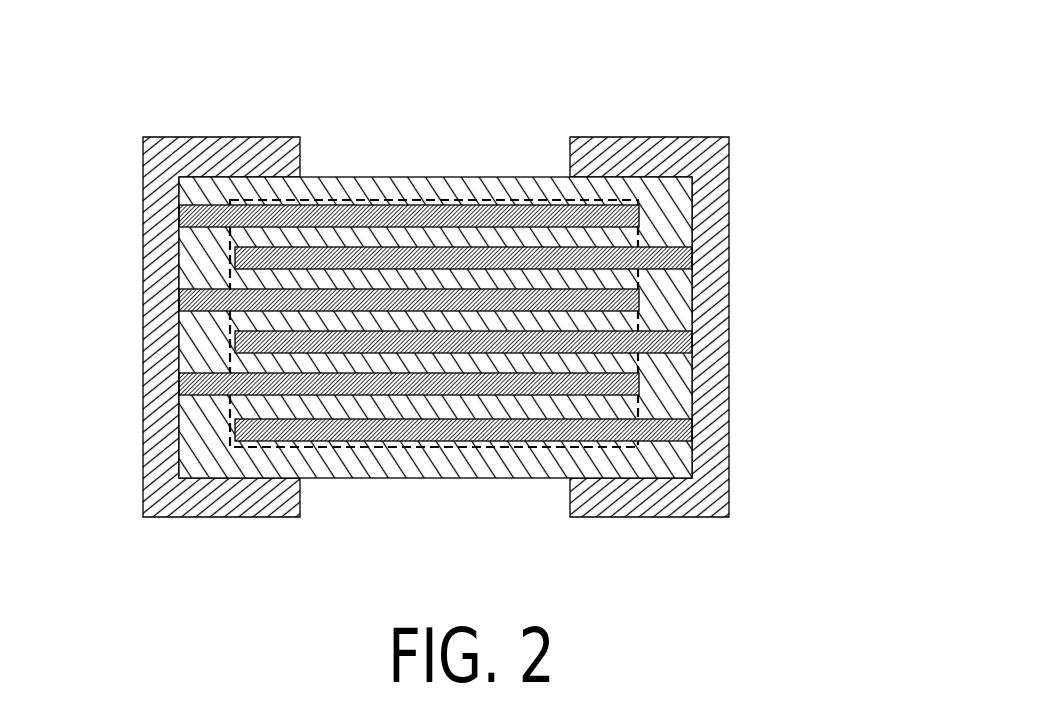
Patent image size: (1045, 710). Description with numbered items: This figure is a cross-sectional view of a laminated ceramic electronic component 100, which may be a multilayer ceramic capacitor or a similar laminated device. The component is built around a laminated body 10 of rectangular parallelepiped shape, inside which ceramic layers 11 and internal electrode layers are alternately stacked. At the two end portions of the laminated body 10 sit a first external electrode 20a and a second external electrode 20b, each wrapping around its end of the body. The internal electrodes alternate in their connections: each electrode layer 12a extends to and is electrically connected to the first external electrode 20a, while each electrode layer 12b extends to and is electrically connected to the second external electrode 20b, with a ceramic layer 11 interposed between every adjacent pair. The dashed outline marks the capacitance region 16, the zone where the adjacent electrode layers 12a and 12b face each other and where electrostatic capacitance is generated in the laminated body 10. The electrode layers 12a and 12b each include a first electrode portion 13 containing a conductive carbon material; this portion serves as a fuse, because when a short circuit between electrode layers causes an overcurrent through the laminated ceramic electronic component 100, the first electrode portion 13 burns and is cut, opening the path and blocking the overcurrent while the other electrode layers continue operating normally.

The laminated ceramic electronic component 100 is at (722, 40).
The laminated body 10 is at (435, 295).
The ceramic layer 11 is at (388, 236).
The electrode layer 12a is at (277, 218).
The electrode layer 12b is at (567, 430).
The first electrode portion 13 is at (435, 324).
The capacitance region 16 is at (505, 468).
The first external electrode 20a is at (158, 208).
The second external electrode 20b is at (715, 228).